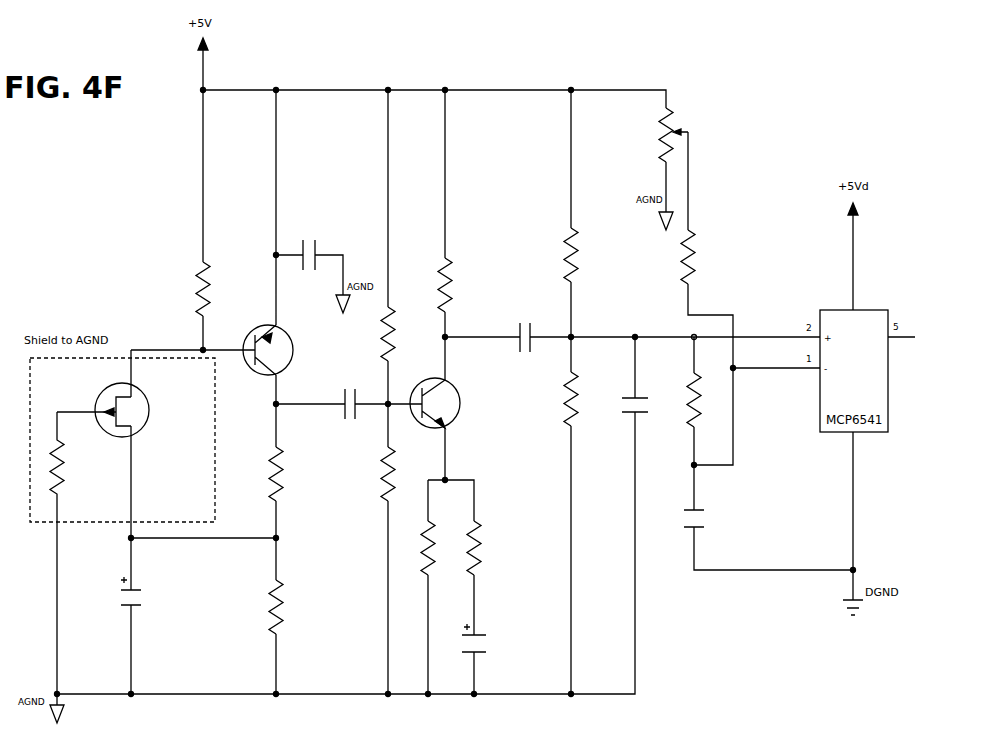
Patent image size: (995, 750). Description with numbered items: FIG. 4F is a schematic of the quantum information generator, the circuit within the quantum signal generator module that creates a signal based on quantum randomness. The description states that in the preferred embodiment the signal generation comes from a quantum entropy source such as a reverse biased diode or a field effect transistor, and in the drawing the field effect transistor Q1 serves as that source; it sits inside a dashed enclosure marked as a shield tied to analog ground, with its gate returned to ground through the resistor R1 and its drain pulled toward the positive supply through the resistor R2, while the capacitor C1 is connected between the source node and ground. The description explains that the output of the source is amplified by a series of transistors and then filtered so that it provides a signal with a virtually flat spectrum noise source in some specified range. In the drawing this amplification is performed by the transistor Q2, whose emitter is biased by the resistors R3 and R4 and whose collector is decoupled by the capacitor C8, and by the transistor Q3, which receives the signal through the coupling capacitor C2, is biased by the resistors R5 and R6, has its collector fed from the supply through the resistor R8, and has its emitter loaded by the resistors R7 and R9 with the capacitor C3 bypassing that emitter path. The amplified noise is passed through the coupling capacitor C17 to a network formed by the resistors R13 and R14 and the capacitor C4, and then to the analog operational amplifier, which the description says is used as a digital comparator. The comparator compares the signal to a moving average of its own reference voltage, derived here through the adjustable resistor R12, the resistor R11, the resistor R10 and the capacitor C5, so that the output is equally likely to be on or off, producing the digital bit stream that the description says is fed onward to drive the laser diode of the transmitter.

The resistor R1 680k R1 is at (72, 553).
The resistor R2 47k R2 is at (215, 203).
The resistor R3 6.8k R3 is at (290, 474).
The resistor R4 5.6k R4 is at (290, 607).
The resistor R5 499k R5 is at (404, 225).
The resistor R6 200k R6 is at (372, 474).
The resistor R7 10k R7 is at (440, 548).
The resistor R8 20k R8 is at (457, 285).
The resistor R9 220 R9 is at (487, 548).
The resistor R10 10k R10 is at (708, 400).
The resistor R11 1M R11 is at (701, 257).
The potentiometer R12 1M R12 is at (688, 135).
The resistor R13 499k R13 is at (587, 255).
The resistor R14 499k R14 is at (588, 399).
The capacitor C1 .33uf C1 is at (149, 635).
The capacitor C2 .047uf C2 is at (347, 404).
The capacitor C3 .33uF C3 is at (493, 644).
The capacitor C4 150pf C4 is at (650, 400).
The capacitor C5 .01uF C5 is at (714, 519).
The capacitor C8 .047uf C8 is at (310, 256).
The capacitor C17 .01uf C17 is at (525, 337).
The JFET Q1 2N5484 Q1 is at (127, 411).
The transistor Q2 BCX71K Q2 is at (288, 350).
The transistor Q3 BCX70 Q3 is at (450, 401).